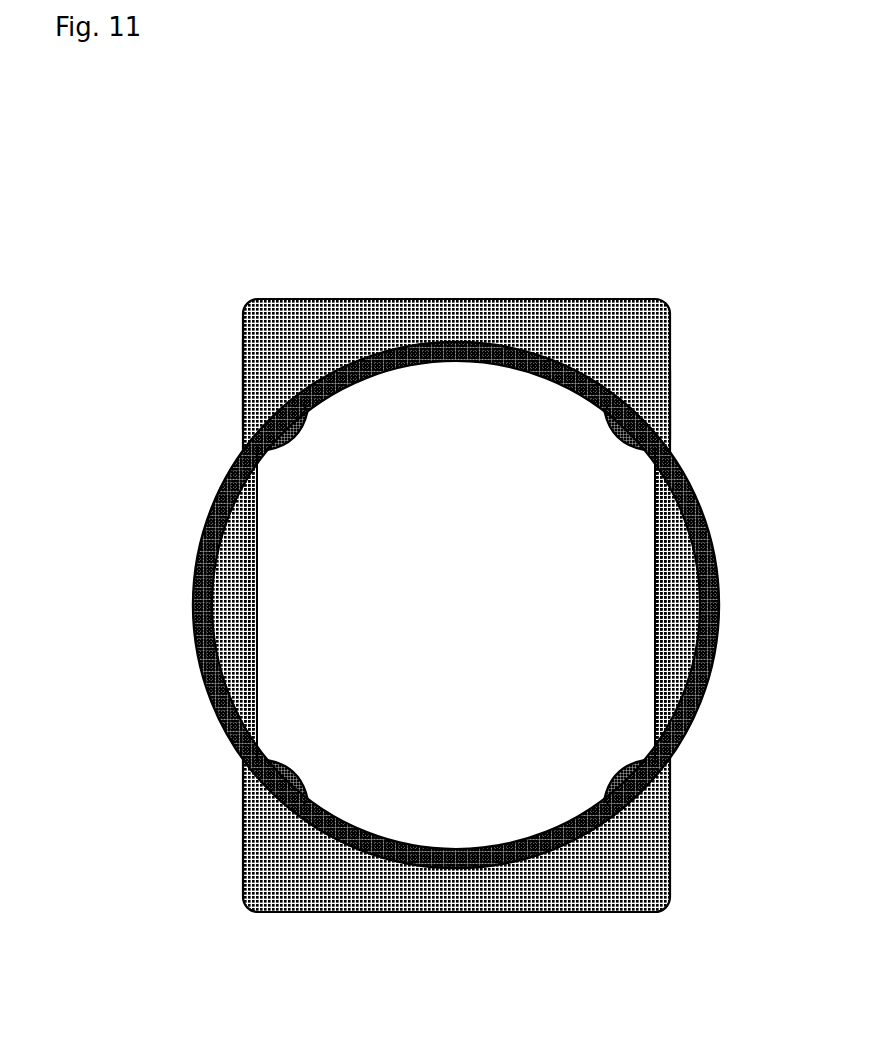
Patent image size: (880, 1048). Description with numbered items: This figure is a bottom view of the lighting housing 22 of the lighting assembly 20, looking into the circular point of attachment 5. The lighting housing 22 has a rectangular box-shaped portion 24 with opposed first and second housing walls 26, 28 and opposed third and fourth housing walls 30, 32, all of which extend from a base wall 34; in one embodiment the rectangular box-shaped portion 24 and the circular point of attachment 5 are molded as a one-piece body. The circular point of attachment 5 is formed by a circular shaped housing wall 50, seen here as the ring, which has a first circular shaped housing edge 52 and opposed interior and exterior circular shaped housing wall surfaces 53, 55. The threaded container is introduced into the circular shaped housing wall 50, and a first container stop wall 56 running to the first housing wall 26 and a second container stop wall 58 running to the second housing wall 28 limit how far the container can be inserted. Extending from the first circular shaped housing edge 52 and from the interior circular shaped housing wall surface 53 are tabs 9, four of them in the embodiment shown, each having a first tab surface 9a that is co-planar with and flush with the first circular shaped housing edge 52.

The circular point of attachment 5 is at (708, 533).
The tabs 9 is at (282, 440).
The first tab surface 9a is at (297, 422).
The lighting assembly 20 is at (693, 368).
The lighting housing 22 is at (583, 338).
The rectangular box-shaped portion 24 is at (650, 882).
The first housing wall 26 is at (670, 419).
The second housing wall 28 is at (243, 386).
The third housing wall 30 is at (447, 912).
The fourth housing wall 32 is at (363, 300).
The base wall 34 is at (640, 360).
The circular shaped housing wall 50 is at (718, 605).
The first circular shaped housing edge 52 is at (712, 679).
The interior circular shaped housing wall surface 53 is at (224, 608).
The exterior circular shaped housing wall surface 55 is at (183, 611).
The first container stop wall 56 is at (680, 604).
The second container stop wall 58 is at (238, 647).